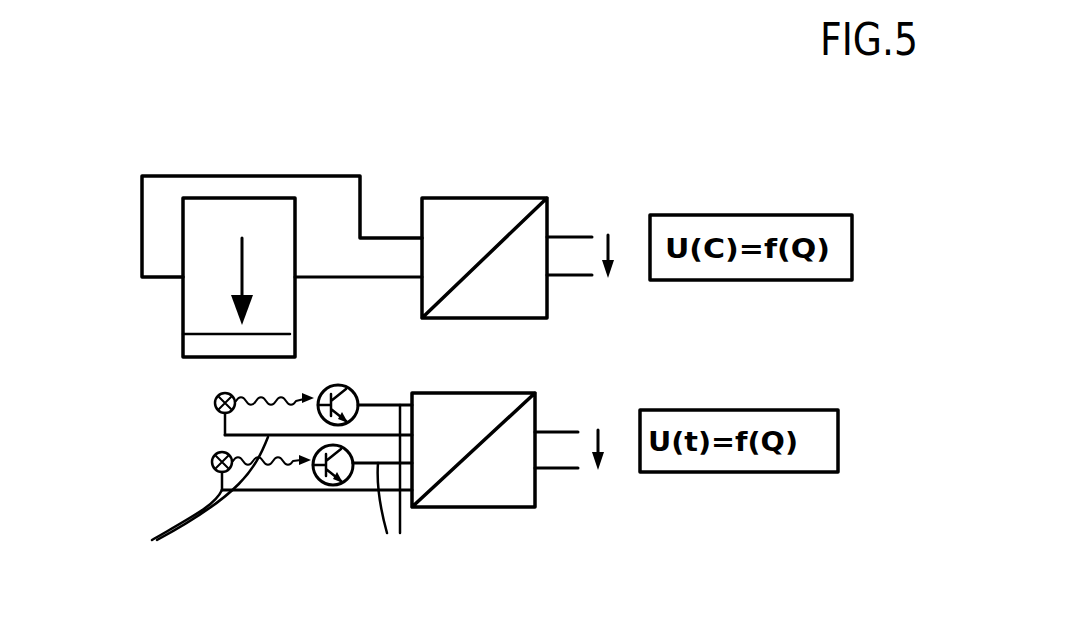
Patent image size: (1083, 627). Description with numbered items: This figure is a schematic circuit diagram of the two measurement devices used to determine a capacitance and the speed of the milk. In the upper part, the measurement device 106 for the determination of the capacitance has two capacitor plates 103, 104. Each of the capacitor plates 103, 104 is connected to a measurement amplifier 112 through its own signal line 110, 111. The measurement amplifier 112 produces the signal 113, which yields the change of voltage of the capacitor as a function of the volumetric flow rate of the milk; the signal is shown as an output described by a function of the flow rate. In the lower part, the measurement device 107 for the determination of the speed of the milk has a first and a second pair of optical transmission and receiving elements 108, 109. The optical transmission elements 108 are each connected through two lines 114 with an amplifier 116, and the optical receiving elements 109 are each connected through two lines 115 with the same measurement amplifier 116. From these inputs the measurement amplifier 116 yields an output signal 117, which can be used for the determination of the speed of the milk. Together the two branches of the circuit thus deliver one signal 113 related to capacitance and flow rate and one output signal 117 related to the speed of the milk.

The capacitor plate 103 is at (183, 318).
The capacitor plate 104 is at (183, 334).
The measurement device for the determination of the capacitance 106 is at (450, 138).
The measurement device for the determination of the speed of the milk 107 is at (264, 507).
The optical transmission elements 108 is at (210, 458).
The optical receiving elements 109 is at (353, 386).
The signal line 110 is at (178, 176).
The signal line 111 is at (337, 277).
The measurement amplifier 112 is at (512, 198).
The signal 113 is at (613, 227).
The lines 114 is at (182, 509).
The lines 115 is at (375, 493).
The measurement amplifier 116 is at (460, 507).
The output signal 117 is at (563, 482).